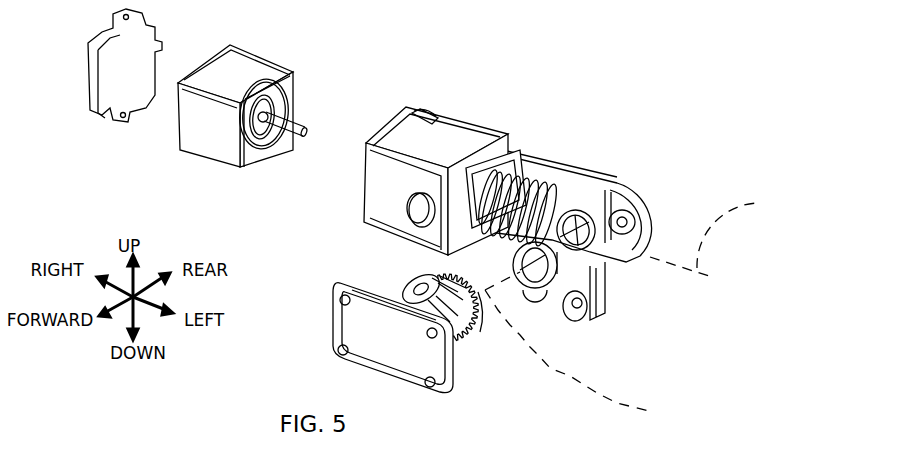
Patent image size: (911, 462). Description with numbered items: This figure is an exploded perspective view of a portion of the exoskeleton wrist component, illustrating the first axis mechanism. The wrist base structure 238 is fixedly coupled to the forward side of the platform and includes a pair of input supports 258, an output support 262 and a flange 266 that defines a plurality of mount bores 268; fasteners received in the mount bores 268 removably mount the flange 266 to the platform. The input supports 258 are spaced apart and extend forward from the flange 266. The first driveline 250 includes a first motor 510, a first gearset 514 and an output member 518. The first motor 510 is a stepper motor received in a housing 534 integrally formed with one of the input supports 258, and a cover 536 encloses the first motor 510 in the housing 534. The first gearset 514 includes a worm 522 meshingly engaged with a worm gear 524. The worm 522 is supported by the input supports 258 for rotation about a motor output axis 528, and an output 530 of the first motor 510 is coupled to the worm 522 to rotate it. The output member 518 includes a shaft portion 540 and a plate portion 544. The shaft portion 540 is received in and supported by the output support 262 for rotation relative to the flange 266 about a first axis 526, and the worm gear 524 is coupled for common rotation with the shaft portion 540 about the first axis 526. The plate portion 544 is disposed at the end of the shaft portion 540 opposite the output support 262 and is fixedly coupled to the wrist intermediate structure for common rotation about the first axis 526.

The cover 536 is at (108, 75).
The first motor 510 is at (283, 88).
The output 530 is at (303, 128).
The housing 534 is at (578, 141).
The wrist base structure 238 is at (633, 200).
The first gearset 514 is at (589, 155).
The worm 522 is at (543, 190).
The input supports 258 is at (618, 213).
The flange 266 is at (602, 305).
The output support 262 is at (563, 277).
The mount bores 268 is at (573, 318).
The motor output axis 528 is at (722, 234).
The first axis 526 is at (588, 348).
The first driveline 250 is at (737, 318).
The output member 518 is at (406, 319).
The plate portion 544 is at (360, 339).
The worm gear 524 is at (423, 283).
The shaft portion 540 is at (480, 300).